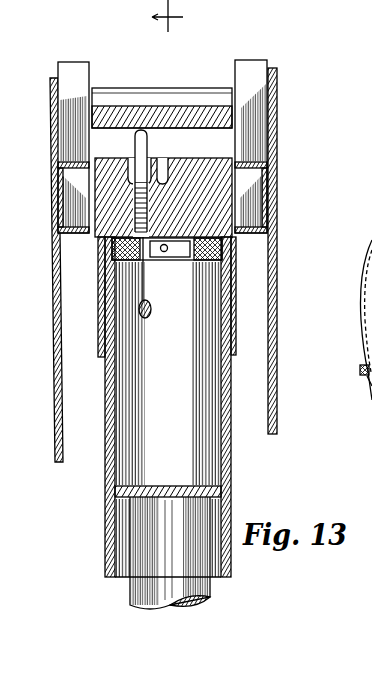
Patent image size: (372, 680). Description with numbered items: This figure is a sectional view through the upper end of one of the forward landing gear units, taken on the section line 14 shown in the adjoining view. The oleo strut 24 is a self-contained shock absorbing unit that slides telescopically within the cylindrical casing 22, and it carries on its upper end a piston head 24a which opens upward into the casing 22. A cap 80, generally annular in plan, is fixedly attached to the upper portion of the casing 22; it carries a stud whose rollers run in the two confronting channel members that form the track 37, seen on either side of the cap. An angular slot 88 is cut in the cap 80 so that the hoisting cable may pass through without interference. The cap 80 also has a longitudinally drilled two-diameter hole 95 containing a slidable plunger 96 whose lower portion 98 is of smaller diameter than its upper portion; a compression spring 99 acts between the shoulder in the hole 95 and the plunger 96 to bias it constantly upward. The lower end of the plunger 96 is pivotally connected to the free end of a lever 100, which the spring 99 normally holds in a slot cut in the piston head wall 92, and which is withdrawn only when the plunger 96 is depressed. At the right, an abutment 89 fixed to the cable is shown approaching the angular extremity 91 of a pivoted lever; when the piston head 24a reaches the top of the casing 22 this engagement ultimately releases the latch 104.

The section line 14 is at (171, 18).
The track 37 is at (63, 72).
The latch 104 is at (128, 100).
The plunger 96 is at (132, 145).
The angular slot 88 is at (163, 162).
The two-diameter hole 95 is at (127, 158).
The compression spring 99 is at (137, 222).
The lower portion of plunger 98 is at (146, 298).
The lever 100 is at (152, 313).
The cap 80 is at (99, 358).
The piston head wall 92 is at (233, 380).
The piston head 24a is at (170, 486).
The cylindrical casing 22 is at (107, 526).
The oleo strut 24 is at (160, 602).
The angular extremity 91 is at (358, 368).
The abutment 89 is at (370, 386).